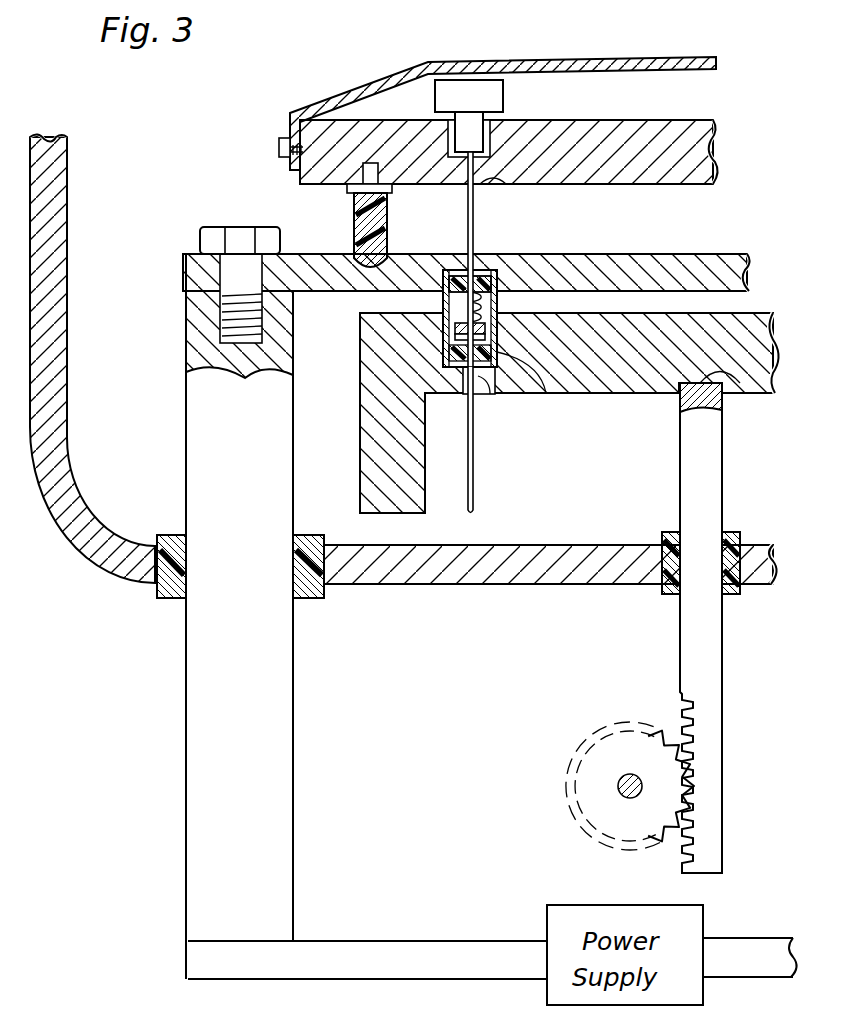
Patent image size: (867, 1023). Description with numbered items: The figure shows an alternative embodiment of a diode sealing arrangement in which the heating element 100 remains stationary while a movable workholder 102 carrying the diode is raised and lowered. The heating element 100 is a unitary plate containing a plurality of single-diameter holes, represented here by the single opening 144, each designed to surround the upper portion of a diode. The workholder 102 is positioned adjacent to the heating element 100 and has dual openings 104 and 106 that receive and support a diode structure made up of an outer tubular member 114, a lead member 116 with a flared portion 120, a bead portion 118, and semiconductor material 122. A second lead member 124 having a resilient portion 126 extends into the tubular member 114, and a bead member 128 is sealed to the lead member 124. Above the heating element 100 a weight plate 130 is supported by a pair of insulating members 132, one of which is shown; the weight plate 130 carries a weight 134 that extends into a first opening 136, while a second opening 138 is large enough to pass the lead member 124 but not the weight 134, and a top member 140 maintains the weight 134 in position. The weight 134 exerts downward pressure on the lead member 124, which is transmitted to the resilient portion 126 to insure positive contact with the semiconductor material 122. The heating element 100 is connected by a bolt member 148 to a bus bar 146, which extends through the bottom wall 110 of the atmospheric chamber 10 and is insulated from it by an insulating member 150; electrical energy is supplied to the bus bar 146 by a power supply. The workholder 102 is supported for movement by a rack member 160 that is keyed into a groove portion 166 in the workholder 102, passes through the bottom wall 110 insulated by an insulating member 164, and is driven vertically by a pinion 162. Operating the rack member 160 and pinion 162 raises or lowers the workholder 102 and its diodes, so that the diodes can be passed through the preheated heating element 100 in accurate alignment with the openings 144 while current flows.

The atmospheric chamber 10 is at (111, 468).
The heating element 100 is at (578, 268).
The workholder 102 is at (732, 336).
The dual opening 104 is at (525, 320).
The dual opening 106 is at (479, 387).
The bottom wall 110 is at (567, 557).
The outer tubular member 114 is at (498, 257).
The lead member 116 is at (476, 458).
The bead portion 118 is at (548, 396).
The flared portion 120 is at (452, 338).
The semiconductor material 122 is at (462, 328).
The lead member 124 is at (475, 212).
The resilient portion 126 is at (462, 302).
The bead member 128 is at (482, 275).
The weight plate 130 is at (658, 175).
The insulating member 132 is at (377, 228).
The weight 134 is at (504, 90).
The first opening 136 is at (493, 137).
The second opening 138 is at (497, 180).
The top member 140 is at (600, 58).
The opening 144 is at (500, 271).
The bus bar 146 is at (283, 500).
The bolt member 148 is at (268, 200).
The insulating member 150 is at (308, 588).
The rack member 160 is at (705, 668).
The pinion 162 is at (653, 758).
The insulating member 164 is at (731, 532).
The groove portion 166 is at (718, 377).